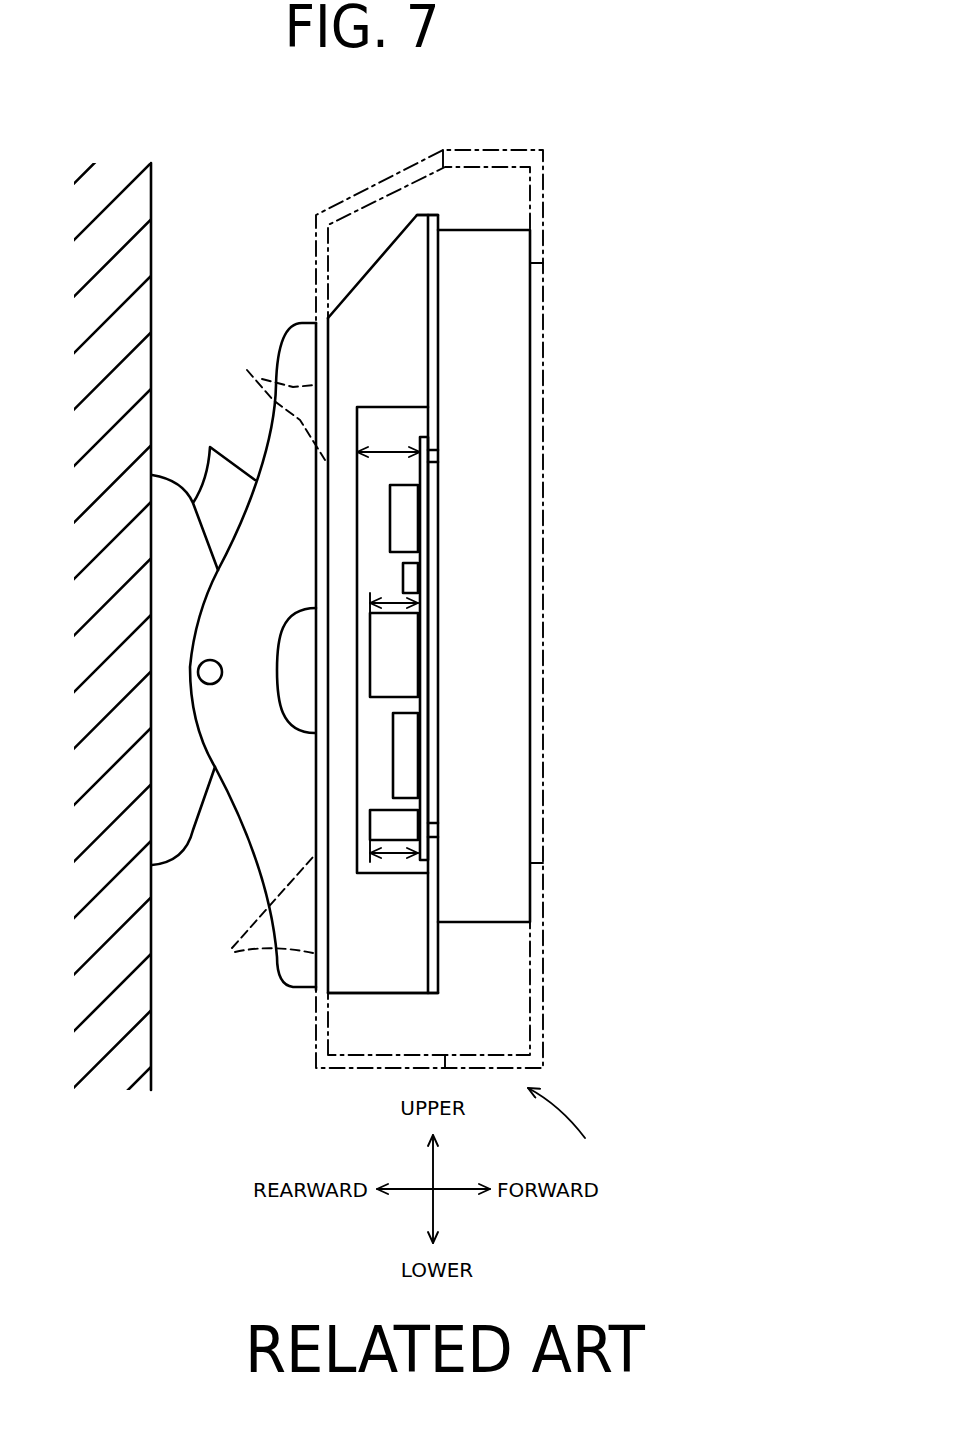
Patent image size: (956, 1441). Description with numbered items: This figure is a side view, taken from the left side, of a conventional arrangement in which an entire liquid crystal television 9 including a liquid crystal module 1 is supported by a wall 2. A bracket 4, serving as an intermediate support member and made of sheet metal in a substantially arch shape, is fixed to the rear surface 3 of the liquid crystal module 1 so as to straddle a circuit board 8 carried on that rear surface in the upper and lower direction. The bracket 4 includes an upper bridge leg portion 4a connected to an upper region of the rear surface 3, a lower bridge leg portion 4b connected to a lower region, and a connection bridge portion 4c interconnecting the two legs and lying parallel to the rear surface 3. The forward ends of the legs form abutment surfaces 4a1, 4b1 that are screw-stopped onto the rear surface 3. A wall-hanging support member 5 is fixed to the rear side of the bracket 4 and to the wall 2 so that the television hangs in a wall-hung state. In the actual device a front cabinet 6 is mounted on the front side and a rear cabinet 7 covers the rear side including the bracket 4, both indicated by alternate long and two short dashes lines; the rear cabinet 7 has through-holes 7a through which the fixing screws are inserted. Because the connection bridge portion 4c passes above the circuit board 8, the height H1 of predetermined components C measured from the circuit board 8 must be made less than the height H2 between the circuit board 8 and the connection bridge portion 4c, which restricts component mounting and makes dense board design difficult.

The liquid crystal module 1 is at (513, 502).
The wall 2 is at (153, 187).
The rear surface 3 is at (430, 854).
The bracket 4 is at (365, 273).
The upper bridge leg portion 4a is at (407, 270).
The abutment surface 4a1 is at (435, 335).
The lower bridge leg portion 4b is at (368, 968).
The abutment surface 4b1 is at (442, 957).
The connection bridge portion 4c is at (340, 545).
The wall-hanging support member 5 is at (203, 637).
The front cabinet 6 is at (543, 182).
The rear cabinet 7 is at (355, 194).
The through-hole 7a is at (262, 666).
The circuit board 8 is at (430, 707).
The liquid crystal television 9 is at (568, 1127).
The predetermined components C is at (412, 655).
The height H1 is at (397, 607).
The height H2 is at (390, 452).